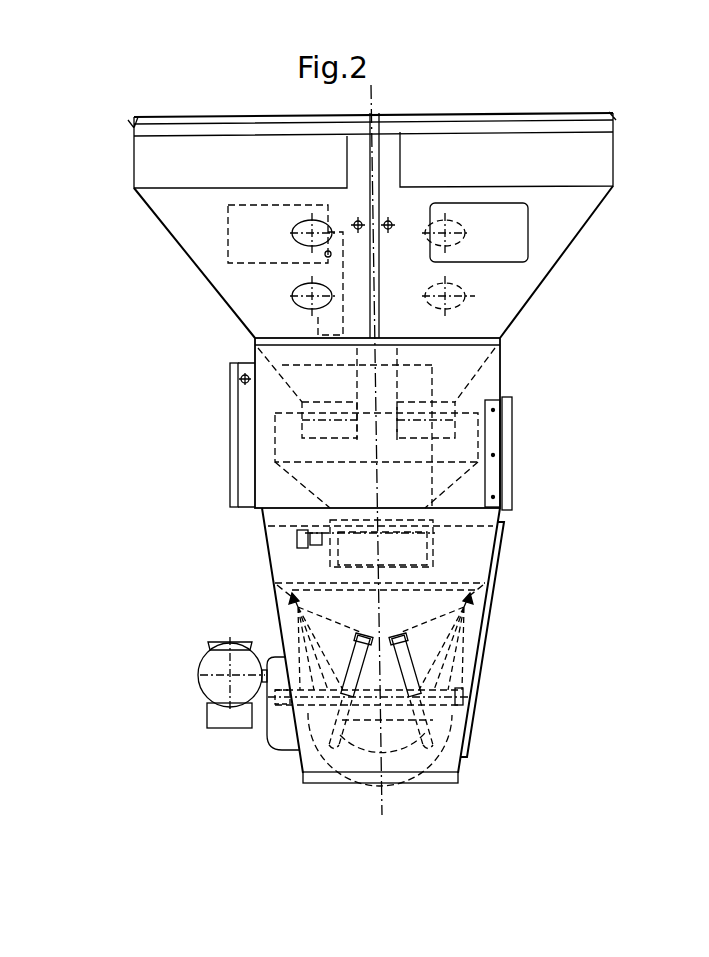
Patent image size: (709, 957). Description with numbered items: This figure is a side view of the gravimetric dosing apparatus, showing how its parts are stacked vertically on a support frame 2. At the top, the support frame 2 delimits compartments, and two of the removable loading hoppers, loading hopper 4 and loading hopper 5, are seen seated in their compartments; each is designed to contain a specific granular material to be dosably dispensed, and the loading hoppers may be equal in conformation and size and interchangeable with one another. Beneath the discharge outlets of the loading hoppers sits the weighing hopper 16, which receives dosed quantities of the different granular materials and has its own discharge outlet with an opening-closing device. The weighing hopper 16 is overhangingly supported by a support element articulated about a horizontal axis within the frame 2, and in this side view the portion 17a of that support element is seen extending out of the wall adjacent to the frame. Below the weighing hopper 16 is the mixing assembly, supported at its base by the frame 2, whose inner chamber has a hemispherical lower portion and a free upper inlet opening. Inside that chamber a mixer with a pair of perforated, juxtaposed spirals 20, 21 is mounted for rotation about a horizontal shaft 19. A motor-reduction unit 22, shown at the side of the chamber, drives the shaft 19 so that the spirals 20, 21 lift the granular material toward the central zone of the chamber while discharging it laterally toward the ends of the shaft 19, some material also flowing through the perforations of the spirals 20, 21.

The support frame 2 is at (492, 365).
The loading hopper 4 is at (593, 158).
The loading hopper 5 is at (160, 152).
The weighing hopper 16 is at (455, 475).
The portion of support element 17a is at (297, 540).
The horizontal shaft 19 is at (385, 697).
The perforated spiral 20 is at (358, 642).
The perforated spiral 21 is at (400, 647).
The motor-reduction unit 22 is at (215, 675).